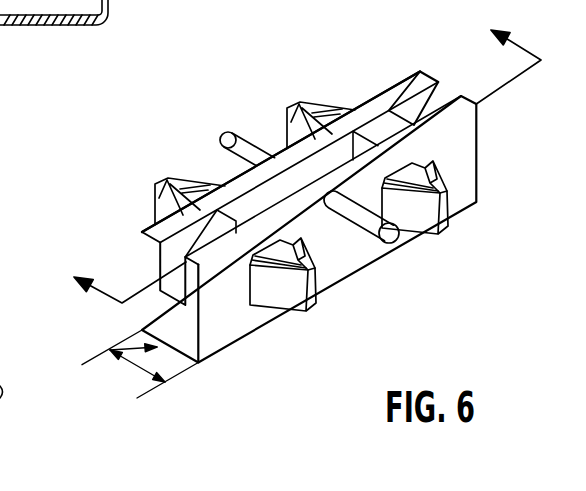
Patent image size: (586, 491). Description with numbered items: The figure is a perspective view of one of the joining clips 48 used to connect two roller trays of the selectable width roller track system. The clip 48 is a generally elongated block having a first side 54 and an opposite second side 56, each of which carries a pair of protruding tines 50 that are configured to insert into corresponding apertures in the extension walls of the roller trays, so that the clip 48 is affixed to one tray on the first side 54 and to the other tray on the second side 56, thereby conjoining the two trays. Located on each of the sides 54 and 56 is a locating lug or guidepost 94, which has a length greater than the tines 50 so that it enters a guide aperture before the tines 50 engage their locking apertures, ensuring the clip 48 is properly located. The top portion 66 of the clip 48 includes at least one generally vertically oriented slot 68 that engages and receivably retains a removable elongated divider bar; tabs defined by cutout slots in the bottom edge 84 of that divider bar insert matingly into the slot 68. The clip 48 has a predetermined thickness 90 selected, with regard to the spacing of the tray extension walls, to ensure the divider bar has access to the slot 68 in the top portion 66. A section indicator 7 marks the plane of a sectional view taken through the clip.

The section line 7- 7 is at (300, 161).
The joining clip 48 is at (128, 361).
The tine 50 is at (160, 182).
The first side 54 is at (331, 267).
The second side 56 is at (235, 171).
The top portion 66 is at (378, 100).
The slot 68 is at (331, 153).
The bottom edge 84 is at (174, 246).
The predetermined thickness 90 is at (147, 371).
The guidepost 94 is at (221, 133).